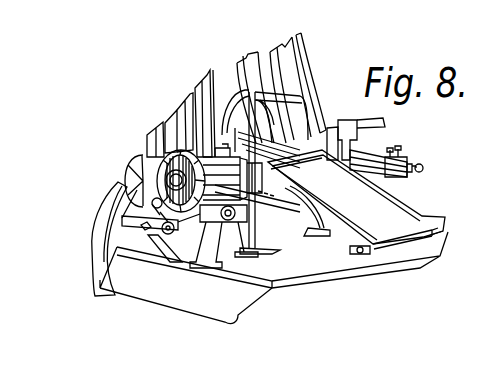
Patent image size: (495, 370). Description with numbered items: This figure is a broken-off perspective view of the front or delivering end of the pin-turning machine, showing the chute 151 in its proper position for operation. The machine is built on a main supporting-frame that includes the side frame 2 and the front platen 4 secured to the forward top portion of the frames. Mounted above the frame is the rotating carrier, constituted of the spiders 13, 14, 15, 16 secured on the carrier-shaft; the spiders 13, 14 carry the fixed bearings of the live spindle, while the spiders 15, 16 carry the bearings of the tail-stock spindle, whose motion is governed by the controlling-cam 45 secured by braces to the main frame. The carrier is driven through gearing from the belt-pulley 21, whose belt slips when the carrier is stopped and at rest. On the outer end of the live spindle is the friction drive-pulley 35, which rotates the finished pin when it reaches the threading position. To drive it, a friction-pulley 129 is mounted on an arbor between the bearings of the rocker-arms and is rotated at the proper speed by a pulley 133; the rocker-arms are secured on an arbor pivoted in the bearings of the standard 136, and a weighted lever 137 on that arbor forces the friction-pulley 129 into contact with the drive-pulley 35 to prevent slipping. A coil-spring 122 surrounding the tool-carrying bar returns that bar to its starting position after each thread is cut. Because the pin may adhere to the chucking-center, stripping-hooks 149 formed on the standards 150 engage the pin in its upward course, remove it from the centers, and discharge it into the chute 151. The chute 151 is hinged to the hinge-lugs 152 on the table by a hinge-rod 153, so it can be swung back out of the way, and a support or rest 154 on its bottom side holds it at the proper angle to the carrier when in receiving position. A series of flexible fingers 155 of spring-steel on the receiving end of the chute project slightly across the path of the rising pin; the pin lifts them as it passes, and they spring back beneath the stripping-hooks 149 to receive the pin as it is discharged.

The side frame 2 is at (186, 285).
The front platen 4 is at (360, 260).
The spider 13 is at (281, 56).
The spider 14 is at (247, 62).
The spider 15 is at (188, 97).
The spider 16 is at (157, 130).
The belt-pulley 21 is at (105, 250).
The friction drive-pulley 35 is at (125, 170).
The controlling-cam 45 is at (312, 68).
The coil-spring 122 is at (302, 195).
The friction-pulley 129 is at (202, 113).
The pulley 133 is at (150, 160).
The standard 136 is at (210, 243).
The weighted lever 137 is at (162, 234).
The stripping-hooks 149 is at (264, 114).
The standards 150 is at (253, 246).
The chute 151 is at (356, 197).
The hinge-lugs 152 is at (400, 270).
The hinge-rod 153 is at (356, 254).
The support or rest 154 is at (302, 242).
The flexible fingers 155 is at (312, 131).